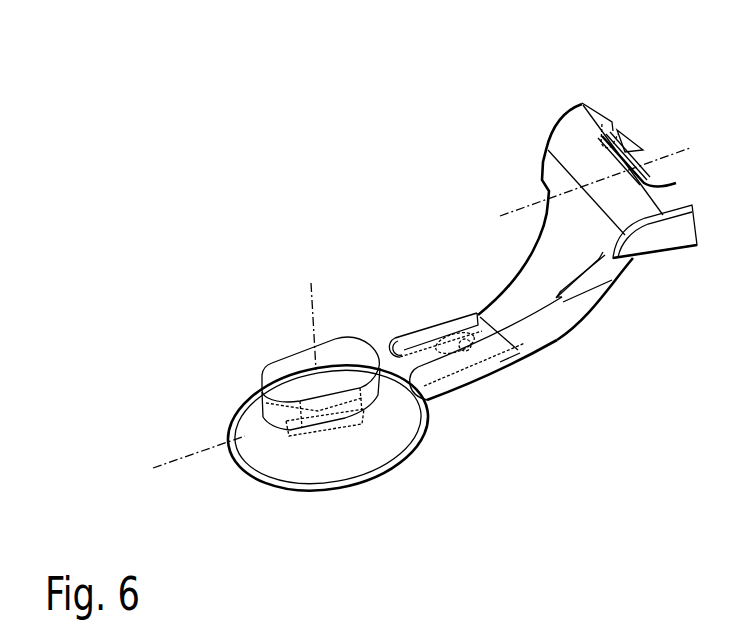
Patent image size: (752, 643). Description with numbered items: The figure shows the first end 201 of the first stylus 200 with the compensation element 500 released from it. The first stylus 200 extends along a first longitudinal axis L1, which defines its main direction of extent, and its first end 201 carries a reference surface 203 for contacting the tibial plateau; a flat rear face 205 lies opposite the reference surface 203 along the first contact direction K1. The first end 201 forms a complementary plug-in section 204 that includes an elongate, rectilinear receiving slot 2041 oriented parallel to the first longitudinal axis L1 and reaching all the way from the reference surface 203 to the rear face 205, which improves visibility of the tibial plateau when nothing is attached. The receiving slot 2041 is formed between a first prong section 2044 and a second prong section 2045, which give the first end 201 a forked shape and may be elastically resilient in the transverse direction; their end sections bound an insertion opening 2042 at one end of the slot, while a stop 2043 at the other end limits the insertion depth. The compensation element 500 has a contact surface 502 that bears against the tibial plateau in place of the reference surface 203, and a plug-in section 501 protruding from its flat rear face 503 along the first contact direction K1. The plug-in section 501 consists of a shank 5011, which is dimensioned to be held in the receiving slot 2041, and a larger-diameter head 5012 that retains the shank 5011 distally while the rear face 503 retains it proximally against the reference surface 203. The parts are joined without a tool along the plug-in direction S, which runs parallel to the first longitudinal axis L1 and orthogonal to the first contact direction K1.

The first stylus 200 is at (521, 269).
The first end 201 is at (430, 240).
The reference surface 203 is at (458, 383).
The complementary plug-in section 204 is at (454, 374).
The receiving slot 2041 is at (441, 338).
The insertion opening 2042 is at (403, 383).
The stop 2043 is at (520, 335).
The first prong section 2044 is at (493, 370).
The second prong section 2045 is at (410, 340).
The rear face 205 is at (480, 317).
The compensation element 500 is at (286, 388).
The plug-in section 501 is at (257, 418).
The contact surface 502 is at (328, 460).
The rear face 503 is at (282, 458).
The shank 5011 is at (285, 434).
The head 5012 is at (262, 374).
The first longitudinal axis L1 is at (678, 149).
The first contact direction K1 is at (323, 311).
The plug-in direction S is at (153, 468).